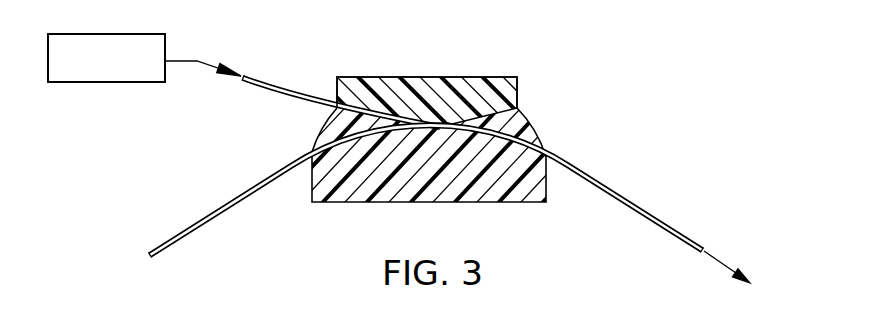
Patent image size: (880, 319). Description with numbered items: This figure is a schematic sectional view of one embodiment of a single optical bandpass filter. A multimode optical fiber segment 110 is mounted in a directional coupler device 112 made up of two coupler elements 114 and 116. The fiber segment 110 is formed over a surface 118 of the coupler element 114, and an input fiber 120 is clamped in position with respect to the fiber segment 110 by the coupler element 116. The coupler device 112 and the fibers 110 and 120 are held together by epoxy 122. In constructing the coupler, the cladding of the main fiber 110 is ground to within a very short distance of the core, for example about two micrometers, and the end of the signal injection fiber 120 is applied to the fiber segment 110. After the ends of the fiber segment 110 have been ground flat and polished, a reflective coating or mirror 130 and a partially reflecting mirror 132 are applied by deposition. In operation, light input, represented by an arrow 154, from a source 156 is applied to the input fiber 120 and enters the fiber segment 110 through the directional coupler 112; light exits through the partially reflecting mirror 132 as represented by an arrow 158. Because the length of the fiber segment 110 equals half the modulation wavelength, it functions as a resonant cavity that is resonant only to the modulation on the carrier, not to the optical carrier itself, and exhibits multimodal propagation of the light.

The multimode optical fiber segment 110 is at (600, 181).
The directional coupler device 112 is at (521, 66).
The coupler element 114 is at (368, 79).
The coupler element 116 is at (352, 200).
The surface 118 is at (443, 123).
The input fiber 120 is at (259, 80).
The epoxy 122 is at (515, 123).
The reflective coating or mirror 130 is at (148, 254).
The partially reflecting mirror 132 is at (704, 255).
The arrow representing light input 154 is at (185, 60).
The source 156 is at (130, 33).
The arrow representing exiting light 158 is at (727, 260).